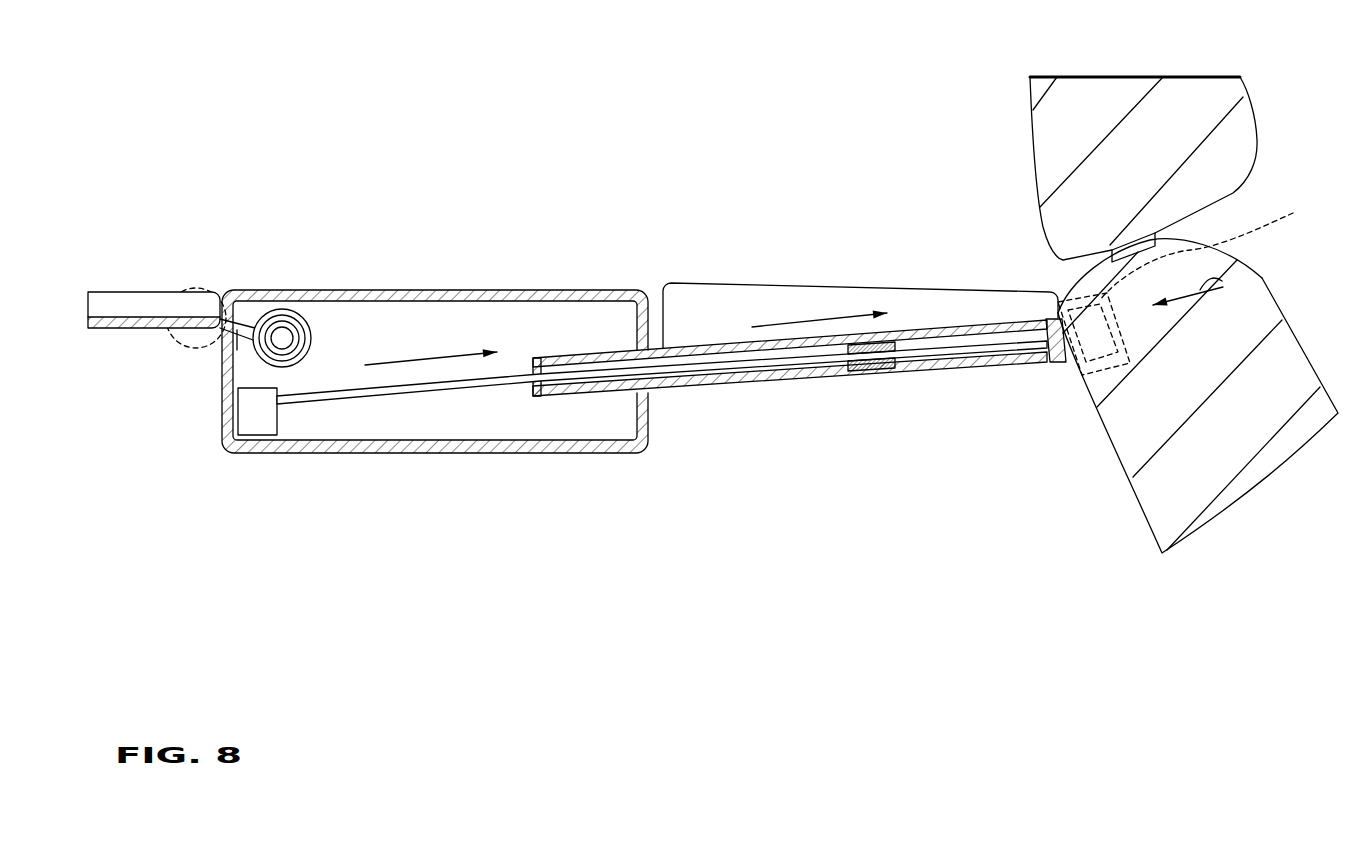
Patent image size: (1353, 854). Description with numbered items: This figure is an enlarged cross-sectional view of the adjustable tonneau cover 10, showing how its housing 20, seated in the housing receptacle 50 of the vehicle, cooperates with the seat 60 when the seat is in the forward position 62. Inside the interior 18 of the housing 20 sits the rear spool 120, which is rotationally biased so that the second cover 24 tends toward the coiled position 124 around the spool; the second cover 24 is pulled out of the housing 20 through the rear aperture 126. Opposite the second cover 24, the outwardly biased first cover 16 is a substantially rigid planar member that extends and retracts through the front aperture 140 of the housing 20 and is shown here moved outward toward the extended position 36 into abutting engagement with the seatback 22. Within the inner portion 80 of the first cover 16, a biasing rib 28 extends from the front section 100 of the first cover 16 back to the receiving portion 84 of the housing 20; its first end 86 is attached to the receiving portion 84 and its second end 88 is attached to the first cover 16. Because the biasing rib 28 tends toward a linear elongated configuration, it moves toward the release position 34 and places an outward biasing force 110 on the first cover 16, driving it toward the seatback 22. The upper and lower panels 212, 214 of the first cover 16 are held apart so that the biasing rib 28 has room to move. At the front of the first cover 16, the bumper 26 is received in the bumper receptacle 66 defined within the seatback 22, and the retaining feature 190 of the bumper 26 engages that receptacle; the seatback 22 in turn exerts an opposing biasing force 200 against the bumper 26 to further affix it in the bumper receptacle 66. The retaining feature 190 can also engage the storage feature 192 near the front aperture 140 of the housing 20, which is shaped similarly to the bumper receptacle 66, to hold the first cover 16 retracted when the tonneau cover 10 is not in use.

The adjustable tonneau cover 10 is at (432, 195).
The first cover 16 is at (768, 390).
The interior 18 is at (393, 410).
The housing 20 is at (446, 290).
The seatback 22 is at (1137, 488).
The second cover 24 is at (130, 315).
The bumper 26 is at (1055, 318).
The biasing rib 28 is at (330, 388).
The release position 34 is at (488, 392).
The extended position 36 is at (697, 343).
The housing receptacle 50 is at (223, 430).
The seat 60 is at (1262, 140).
The forward position 62 is at (1283, 307).
The bumper receptacle 66 is at (1214, 244).
The inner portion 80 is at (566, 360).
The receiving portion 84 is at (248, 407).
The first end 86 is at (302, 400).
The second end 88 is at (1045, 363).
The front section 100 is at (1046, 338).
The outward biasing force 110 is at (790, 325).
The rear spool 120 is at (282, 338).
The coiled position 124 is at (167, 305).
The rear aperture 126 is at (233, 340).
The front aperture 140 is at (642, 333).
The retaining feature 190 is at (1098, 345).
The storage feature 192 is at (648, 395).
The opposing biasing force 200 is at (1215, 282).
The upper panel 212 is at (870, 345).
The lower panel 214 is at (900, 368).